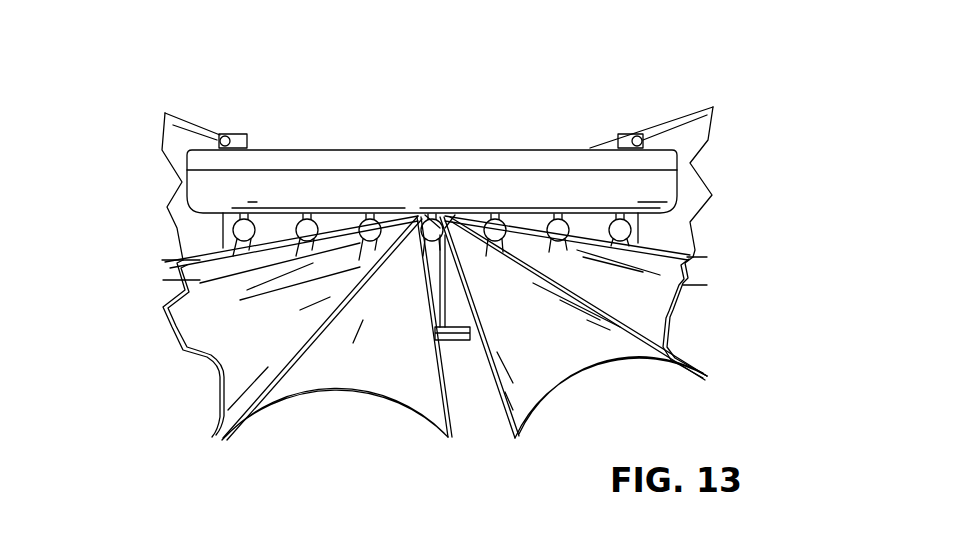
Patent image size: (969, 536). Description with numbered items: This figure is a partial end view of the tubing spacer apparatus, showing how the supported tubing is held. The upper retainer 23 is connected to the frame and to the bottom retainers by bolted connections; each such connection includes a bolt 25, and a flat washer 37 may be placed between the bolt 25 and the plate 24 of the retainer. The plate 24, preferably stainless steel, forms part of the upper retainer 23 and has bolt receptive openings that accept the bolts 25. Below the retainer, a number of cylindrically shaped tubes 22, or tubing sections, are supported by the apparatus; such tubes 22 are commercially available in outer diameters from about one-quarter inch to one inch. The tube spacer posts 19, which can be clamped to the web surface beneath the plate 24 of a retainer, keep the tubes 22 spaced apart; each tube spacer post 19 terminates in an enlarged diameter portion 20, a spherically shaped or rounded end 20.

The tube spacer post 19 is at (442, 270).
The spherical end/enlarged diameter portion 20 is at (435, 227).
The tube/tubing section 22 is at (330, 377).
The upper retainer 23 is at (213, 188).
The plate 24 is at (278, 158).
The bolt 25 is at (222, 138).
The flat washer 37 is at (218, 140).